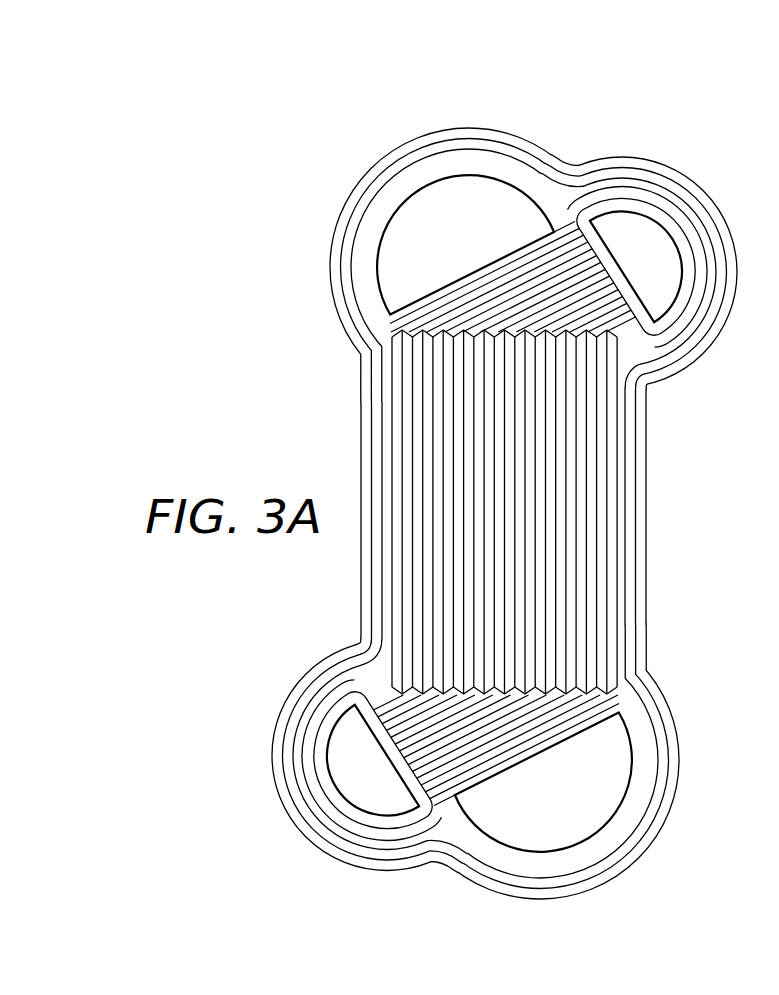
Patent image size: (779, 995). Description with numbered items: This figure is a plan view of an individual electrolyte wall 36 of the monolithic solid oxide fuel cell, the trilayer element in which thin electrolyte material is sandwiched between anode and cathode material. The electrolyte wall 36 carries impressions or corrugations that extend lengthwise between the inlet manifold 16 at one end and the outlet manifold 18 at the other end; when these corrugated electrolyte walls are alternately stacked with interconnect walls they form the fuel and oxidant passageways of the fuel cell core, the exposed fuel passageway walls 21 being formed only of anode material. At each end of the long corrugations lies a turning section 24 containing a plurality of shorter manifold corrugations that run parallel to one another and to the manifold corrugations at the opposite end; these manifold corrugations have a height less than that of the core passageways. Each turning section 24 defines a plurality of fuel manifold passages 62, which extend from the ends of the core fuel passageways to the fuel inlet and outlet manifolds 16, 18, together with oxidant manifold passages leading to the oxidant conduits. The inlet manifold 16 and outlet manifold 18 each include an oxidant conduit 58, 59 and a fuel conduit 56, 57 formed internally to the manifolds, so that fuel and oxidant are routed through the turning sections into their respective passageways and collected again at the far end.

The inlet manifold 16 is at (432, 863).
The outlet manifold 18 is at (578, 158).
The fuel passageway walls 21 is at (588, 453).
The turning section 24 is at (473, 282).
The electrolyte wall 36 is at (348, 372).
The fuel conduit 56 is at (630, 808).
The fuel conduit 57 is at (428, 186).
The oxidant conduit 58 is at (328, 738).
The oxidant conduit 59 is at (680, 225).
The fuel manifold passages 62 is at (610, 276).